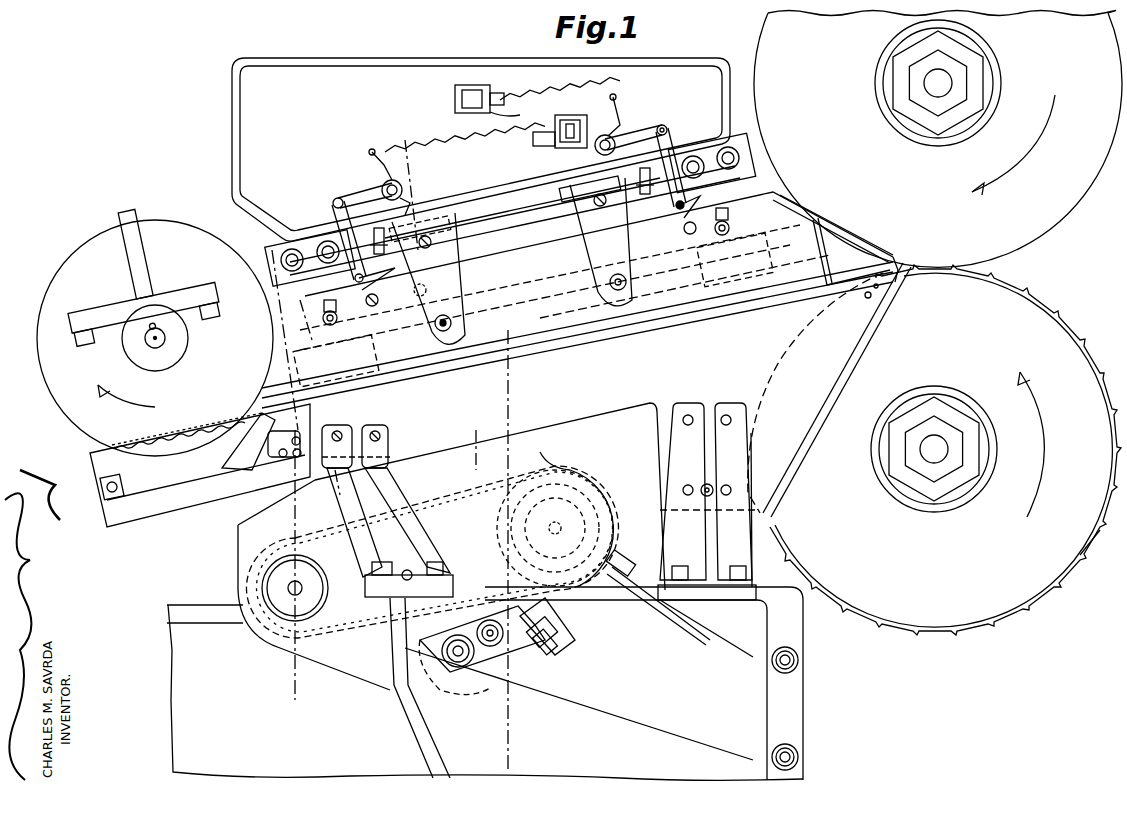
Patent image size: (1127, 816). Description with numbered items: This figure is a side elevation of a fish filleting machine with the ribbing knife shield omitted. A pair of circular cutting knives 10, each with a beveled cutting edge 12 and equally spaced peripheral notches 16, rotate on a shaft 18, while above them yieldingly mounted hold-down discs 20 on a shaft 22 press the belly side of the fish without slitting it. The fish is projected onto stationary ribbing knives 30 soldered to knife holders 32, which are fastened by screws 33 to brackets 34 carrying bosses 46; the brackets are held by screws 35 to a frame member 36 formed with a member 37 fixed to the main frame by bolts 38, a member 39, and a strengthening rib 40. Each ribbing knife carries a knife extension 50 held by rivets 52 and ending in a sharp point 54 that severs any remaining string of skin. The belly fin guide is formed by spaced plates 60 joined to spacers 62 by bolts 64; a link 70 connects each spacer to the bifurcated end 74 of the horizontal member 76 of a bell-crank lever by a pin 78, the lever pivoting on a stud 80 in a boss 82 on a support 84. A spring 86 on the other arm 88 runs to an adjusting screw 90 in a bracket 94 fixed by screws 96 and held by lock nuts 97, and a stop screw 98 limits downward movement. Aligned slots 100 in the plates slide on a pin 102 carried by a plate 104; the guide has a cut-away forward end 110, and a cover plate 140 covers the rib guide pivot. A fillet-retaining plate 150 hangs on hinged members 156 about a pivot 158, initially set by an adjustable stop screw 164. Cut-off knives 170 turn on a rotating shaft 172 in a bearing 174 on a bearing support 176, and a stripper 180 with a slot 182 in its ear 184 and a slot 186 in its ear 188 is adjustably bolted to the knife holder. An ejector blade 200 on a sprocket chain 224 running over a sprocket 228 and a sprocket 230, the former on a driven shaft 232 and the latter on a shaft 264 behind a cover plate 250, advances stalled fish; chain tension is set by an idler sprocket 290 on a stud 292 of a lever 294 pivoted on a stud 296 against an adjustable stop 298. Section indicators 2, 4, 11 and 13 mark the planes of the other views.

The section line 2 is at (500, 338).
The section line 4 is at (262, 256).
The circular cutting knives 10 is at (1018, 600).
The section line 11 is at (398, 148).
The cutting edge 12 is at (998, 624).
The section line 13 is at (280, 302).
The peripheral notches 16 is at (1101, 542).
The shaft 18 is at (936, 449).
The hold-down discs 20 is at (1038, 225).
The shaft 22 is at (940, 83).
The ribbing knives 30 is at (590, 338).
The knife holders 32 is at (600, 410).
The screws 33 is at (385, 435).
The brackets 34 is at (425, 548).
The screws 35 is at (756, 554).
The frame member 36 is at (630, 592).
The member 37 is at (755, 702).
The bolts 38 is at (798, 660).
The member 39 is at (422, 745).
The strengthening rib 40 is at (612, 725).
The bosses 46 is at (410, 570).
The knife extension 50 is at (870, 300).
The rivets 52 is at (860, 300).
The sharp point 54 is at (900, 272).
The plates 60 is at (782, 205).
The spacers 62 is at (425, 335).
The bolts 64 is at (378, 300).
The link 70 is at (334, 212).
The bifurcated end 74 is at (336, 200).
The horizontal member of bell-crank lever 76 is at (362, 198).
The pin 78 is at (668, 128).
The stud 80 is at (402, 186).
The boss 82 is at (410, 200).
The support 84 is at (515, 190).
The spring 86 is at (437, 140).
The arm of bell-crank lever 88 is at (372, 149).
The adjusting screw 90 is at (500, 96).
The bracket 94 is at (562, 121).
The screws 96 is at (470, 88).
The lock nuts 97 is at (517, 117).
The stop screw 98 is at (380, 256).
The aligned slots 100 is at (333, 327).
The pin 102 is at (305, 322).
The plate 104 is at (748, 170).
The cut-away forward end 110 is at (857, 240).
The cover plate 140 is at (857, 268).
The fillet-retaining plate 150 is at (652, 323).
The hinged members 156 is at (445, 245).
The pivot 158 is at (450, 224).
The adjustable stop screw 164 is at (505, 230).
The cut-off knives 170 is at (45, 375).
The rotating shaft 172 is at (162, 345).
The bearing 174 is at (128, 348).
The bearing support 176 is at (172, 284).
The stripper 180 is at (207, 465).
The slot 182 is at (268, 470).
The ear 184 is at (285, 458).
The slot 186 is at (107, 488).
The ear 188 is at (110, 495).
The ejector blade 200 is at (688, 620).
The sprocket chain 224 is at (428, 488).
The sprocket 228 is at (240, 555).
The sprocket 230 is at (614, 500).
The shaft 232 is at (288, 588).
The cover plate 250 is at (560, 466).
The shaft 264 is at (562, 522).
The idler sprocket 290 is at (455, 605).
The stud 292 is at (445, 636).
The lever 294 is at (485, 675).
The stud 296 is at (555, 650).
The stop 298 is at (556, 644).